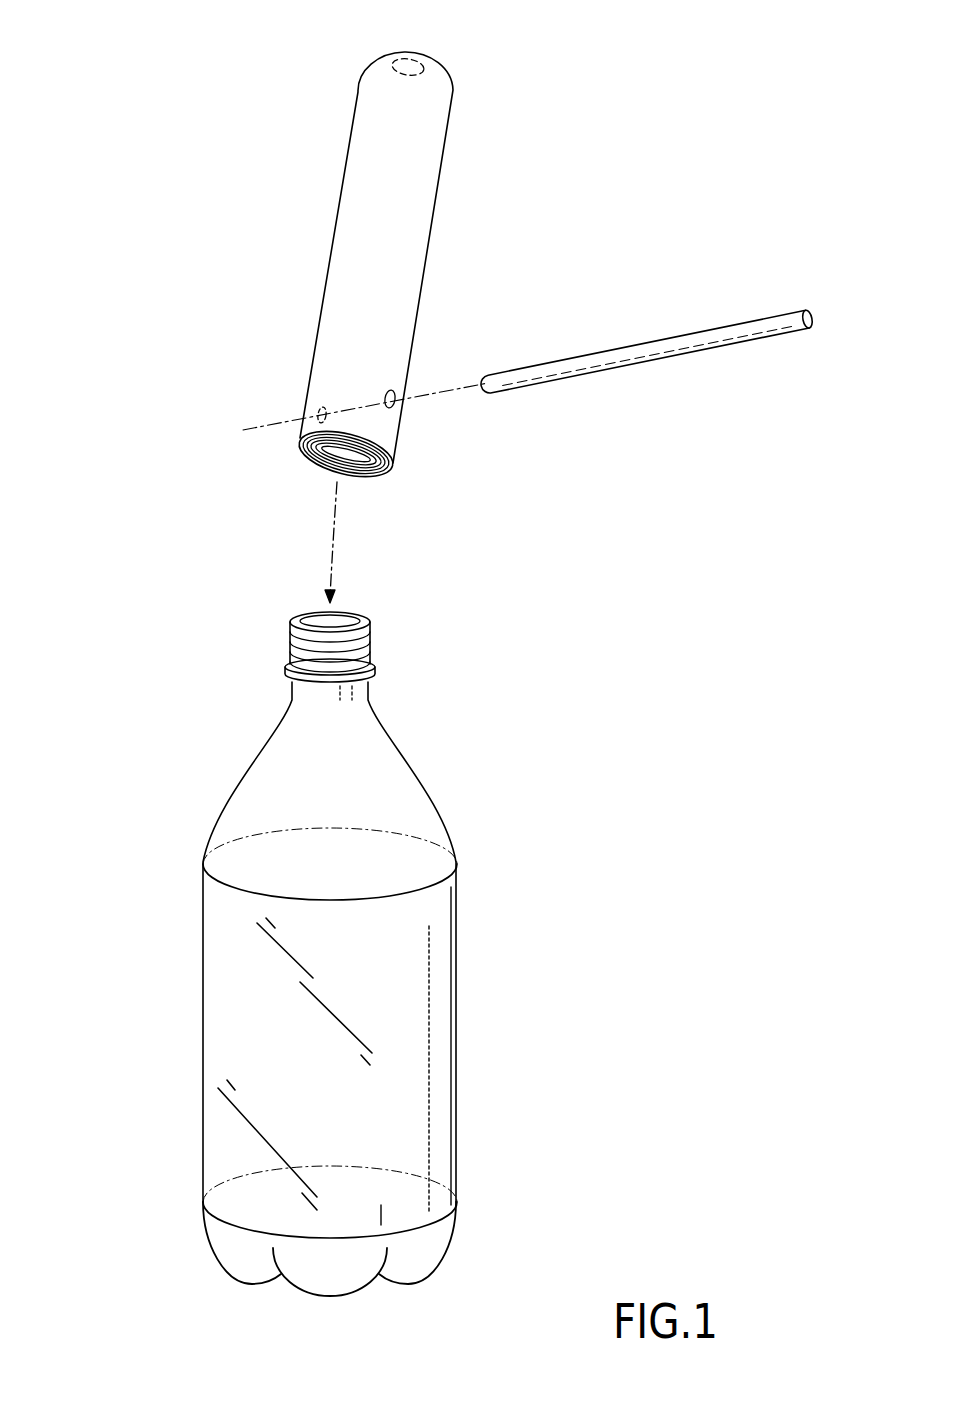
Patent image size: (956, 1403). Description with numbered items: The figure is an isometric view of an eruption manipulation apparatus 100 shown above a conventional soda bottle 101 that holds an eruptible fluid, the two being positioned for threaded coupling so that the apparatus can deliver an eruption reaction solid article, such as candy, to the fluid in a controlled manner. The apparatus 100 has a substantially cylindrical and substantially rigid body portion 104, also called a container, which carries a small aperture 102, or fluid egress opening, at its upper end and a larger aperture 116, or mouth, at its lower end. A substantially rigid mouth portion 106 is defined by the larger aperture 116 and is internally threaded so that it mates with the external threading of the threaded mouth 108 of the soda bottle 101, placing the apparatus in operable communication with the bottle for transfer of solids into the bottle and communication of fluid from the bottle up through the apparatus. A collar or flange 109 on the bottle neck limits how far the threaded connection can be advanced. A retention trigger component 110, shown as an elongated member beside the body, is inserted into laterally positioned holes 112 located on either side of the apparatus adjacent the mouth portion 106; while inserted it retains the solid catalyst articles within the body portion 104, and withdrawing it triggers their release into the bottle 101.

The eruption manipulation apparatus 100 is at (302, 237).
The soda bottle 101 is at (190, 805).
The small aperture 102 is at (423, 70).
The body portion 104 is at (437, 210).
The mouth portion 106 is at (392, 467).
The threaded mouth 108 is at (362, 641).
The collar or flange 109 is at (373, 676).
The retention trigger component 110 is at (668, 337).
The laterally positioned holes 112 is at (318, 405).
The larger aperture 116 is at (312, 467).